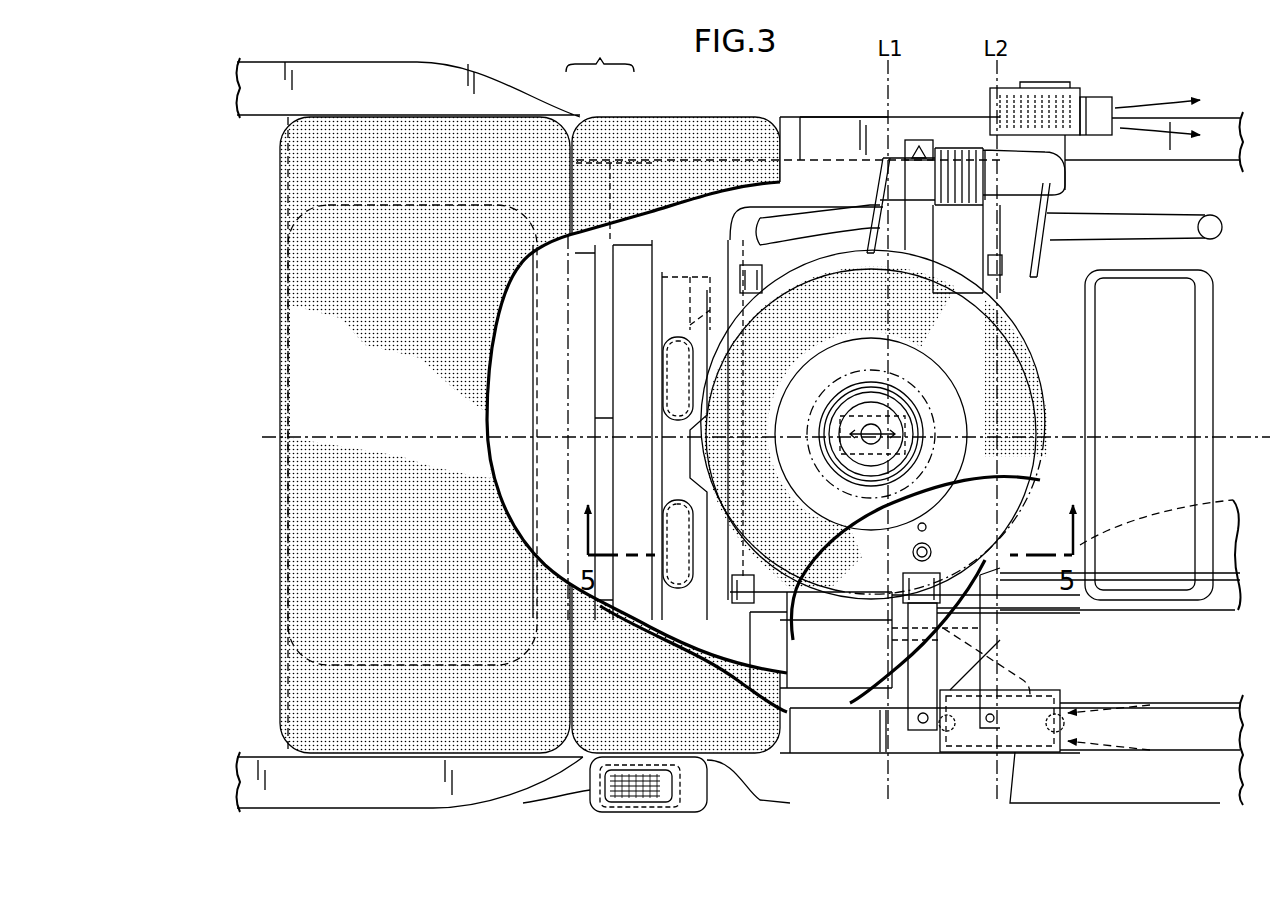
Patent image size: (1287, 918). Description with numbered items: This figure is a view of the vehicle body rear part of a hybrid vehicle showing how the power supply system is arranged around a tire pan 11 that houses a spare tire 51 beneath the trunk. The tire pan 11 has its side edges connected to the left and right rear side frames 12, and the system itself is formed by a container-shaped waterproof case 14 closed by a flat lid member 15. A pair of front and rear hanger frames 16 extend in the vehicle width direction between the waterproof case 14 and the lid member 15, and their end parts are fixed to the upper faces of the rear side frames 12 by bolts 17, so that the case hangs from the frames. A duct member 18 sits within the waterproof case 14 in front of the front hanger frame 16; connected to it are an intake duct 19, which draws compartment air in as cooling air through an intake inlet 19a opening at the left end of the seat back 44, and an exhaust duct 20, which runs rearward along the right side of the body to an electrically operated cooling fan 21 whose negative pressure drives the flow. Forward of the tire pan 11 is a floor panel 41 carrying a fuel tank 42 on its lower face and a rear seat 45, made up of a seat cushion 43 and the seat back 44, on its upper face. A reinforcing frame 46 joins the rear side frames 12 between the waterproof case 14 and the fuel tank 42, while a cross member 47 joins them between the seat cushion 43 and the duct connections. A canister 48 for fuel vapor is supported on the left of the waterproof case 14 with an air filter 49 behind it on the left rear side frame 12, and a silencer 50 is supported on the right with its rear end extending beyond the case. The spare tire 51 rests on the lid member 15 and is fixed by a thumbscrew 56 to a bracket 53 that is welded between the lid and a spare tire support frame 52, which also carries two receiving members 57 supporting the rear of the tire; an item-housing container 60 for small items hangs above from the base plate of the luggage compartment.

The tire pan 11 is at (1120, 458).
The rear side frame 12 is at (835, 130).
The waterproof case 14 is at (767, 270).
The lid member 15 is at (860, 582).
The hanger frame 16 is at (760, 490).
The bolt 17 is at (912, 150).
The duct member 18 is at (668, 450).
The intake duct 19 is at (760, 787).
The intake inlet 19a is at (645, 802).
The exhaust duct 20 is at (812, 170).
The cooling fan 21 is at (1050, 100).
The floor panel 41 is at (391, 435).
The fuel tank 42 is at (290, 338).
The seat cushion 43 is at (517, 160).
The seat back 44 is at (652, 118).
The rear seat 45 is at (600, 54).
The reinforcing frame 46 is at (582, 338).
The cross member 47 is at (617, 372).
The canister 48 is at (811, 640).
The air filter 49 is at (968, 752).
The silencer 50 is at (966, 220).
The spare tire 51 is at (1018, 386).
The spare tire support frame 52 is at (1000, 506).
The bracket 53 is at (805, 418).
The thumbscrew 56 is at (866, 428).
The receiving member 57 is at (1003, 293).
The item-housing container 60 is at (1193, 332).